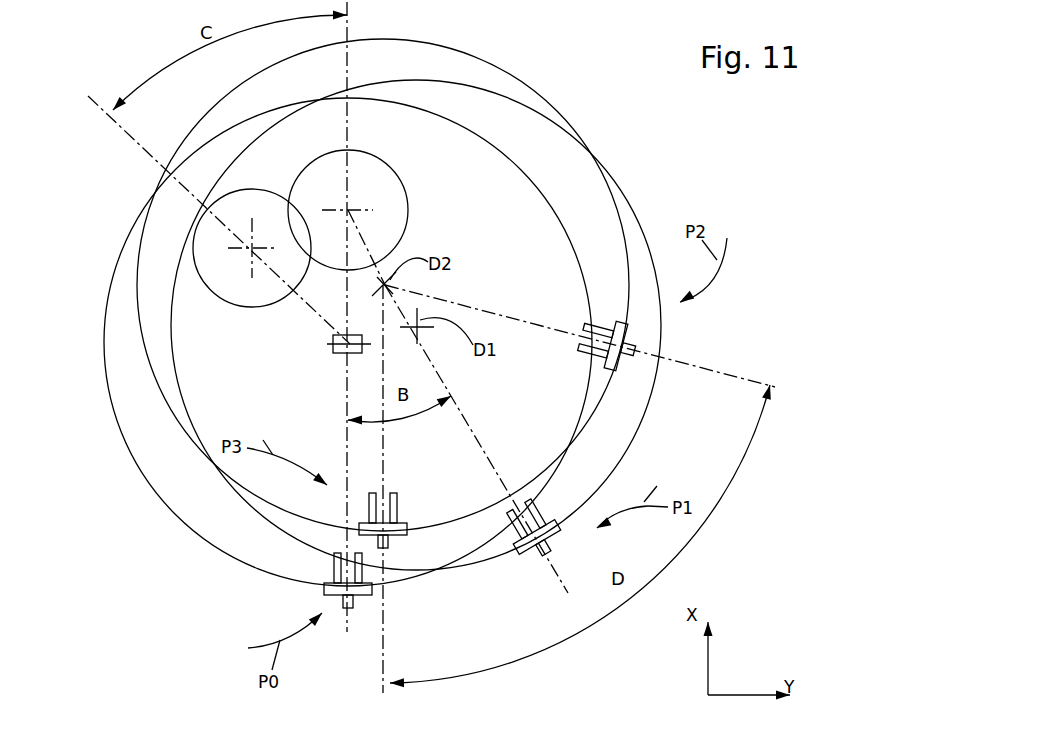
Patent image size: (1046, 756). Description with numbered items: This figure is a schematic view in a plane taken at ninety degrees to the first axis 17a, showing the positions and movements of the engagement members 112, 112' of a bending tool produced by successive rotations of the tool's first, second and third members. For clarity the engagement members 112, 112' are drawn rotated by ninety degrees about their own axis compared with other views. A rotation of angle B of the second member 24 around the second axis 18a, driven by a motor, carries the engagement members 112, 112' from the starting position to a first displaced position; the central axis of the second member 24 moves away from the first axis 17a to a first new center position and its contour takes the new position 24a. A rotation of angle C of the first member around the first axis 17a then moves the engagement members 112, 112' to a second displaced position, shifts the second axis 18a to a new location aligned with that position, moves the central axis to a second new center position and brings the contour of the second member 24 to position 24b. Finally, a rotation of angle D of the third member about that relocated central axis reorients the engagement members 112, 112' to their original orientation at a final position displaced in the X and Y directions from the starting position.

The second member 24 is at (128, 462).
The contour of second member after rotation of angle B 24a is at (640, 222).
The contour of second member after rotation of angle C 24b is at (493, 62).
The second axis 18a is at (349, 209).
The first axis 17a is at (338, 350).
The engagement member 112 is at (287, 586).
The engagement member 112' is at (411, 562).